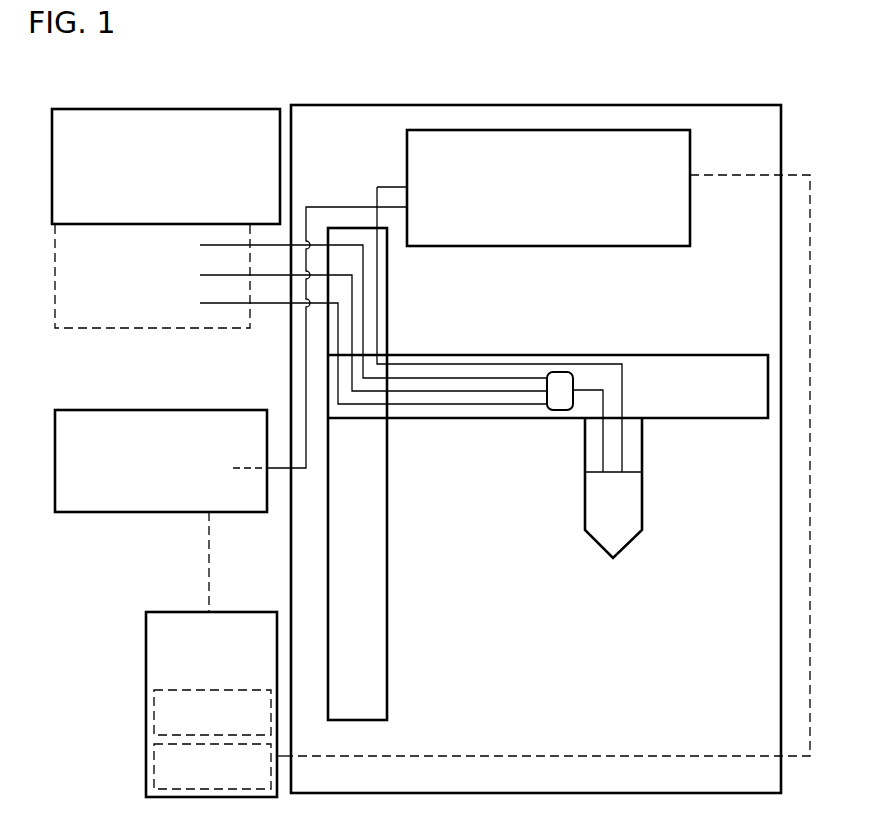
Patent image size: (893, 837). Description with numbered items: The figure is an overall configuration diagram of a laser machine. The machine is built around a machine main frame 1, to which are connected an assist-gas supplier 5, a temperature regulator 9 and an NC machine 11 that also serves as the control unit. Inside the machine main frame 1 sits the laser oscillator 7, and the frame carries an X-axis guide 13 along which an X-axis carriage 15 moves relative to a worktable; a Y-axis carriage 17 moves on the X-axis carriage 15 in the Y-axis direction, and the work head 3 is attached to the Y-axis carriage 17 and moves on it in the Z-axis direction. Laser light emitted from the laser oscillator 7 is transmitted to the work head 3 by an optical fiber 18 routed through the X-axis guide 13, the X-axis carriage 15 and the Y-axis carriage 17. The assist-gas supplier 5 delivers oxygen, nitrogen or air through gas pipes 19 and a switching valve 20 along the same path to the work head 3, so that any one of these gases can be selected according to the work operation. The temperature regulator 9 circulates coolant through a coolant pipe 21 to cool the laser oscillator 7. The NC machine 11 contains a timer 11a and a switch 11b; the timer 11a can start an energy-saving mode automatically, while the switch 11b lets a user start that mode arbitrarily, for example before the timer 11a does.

The machine main frame 1 is at (547, 105).
The work head 3 is at (585, 505).
The assist-gas supplier 5 is at (157, 109).
The laser oscillator 7 is at (690, 150).
The temperature regulator 9 is at (160, 410).
The NC machine 11 is at (175, 612).
The timer 11a is at (154, 770).
The switch 11b is at (154, 715).
The X-axis guide 13 is at (388, 530).
The X-axis carriage 15 is at (675, 355).
The Y-axis carriage 17 is at (585, 447).
The optical fiber 18 is at (384, 187).
The gas pipes 19 is at (278, 245).
The switching valve 20 is at (558, 400).
The coolant pipe 21 is at (306, 383).